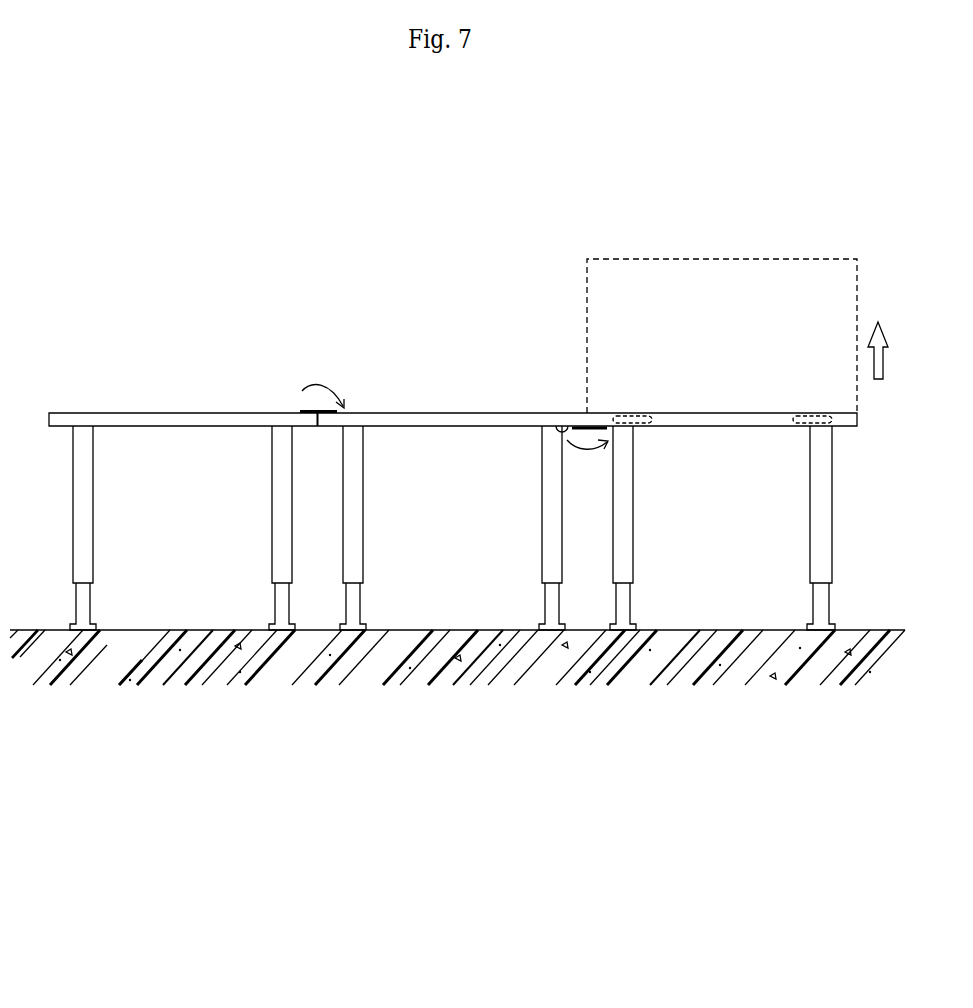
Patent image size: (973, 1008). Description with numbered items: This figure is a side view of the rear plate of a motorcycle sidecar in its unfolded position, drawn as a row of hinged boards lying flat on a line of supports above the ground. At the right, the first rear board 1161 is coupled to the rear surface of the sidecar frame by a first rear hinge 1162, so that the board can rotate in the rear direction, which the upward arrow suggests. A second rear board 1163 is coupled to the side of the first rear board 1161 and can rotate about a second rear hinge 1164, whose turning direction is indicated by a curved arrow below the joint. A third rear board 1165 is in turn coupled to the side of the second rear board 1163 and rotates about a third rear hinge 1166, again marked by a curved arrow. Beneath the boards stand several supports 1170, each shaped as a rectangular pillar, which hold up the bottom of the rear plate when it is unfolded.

The first rear board 1161 is at (705, 420).
The first rear hinge 1162 is at (857, 422).
The second rear board 1163 is at (455, 414).
The second rear hinge 1164 is at (556, 425).
The third rear board 1165 is at (177, 415).
The third rear hinge 1166 is at (298, 410).
The support 1170 is at (818, 528).